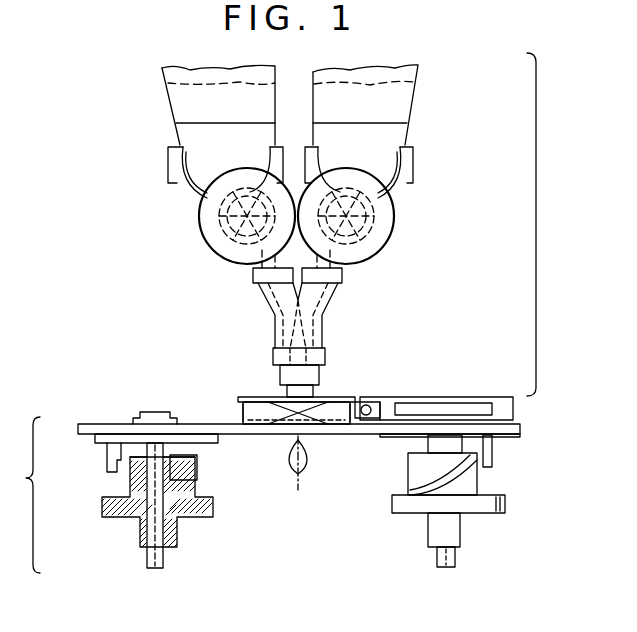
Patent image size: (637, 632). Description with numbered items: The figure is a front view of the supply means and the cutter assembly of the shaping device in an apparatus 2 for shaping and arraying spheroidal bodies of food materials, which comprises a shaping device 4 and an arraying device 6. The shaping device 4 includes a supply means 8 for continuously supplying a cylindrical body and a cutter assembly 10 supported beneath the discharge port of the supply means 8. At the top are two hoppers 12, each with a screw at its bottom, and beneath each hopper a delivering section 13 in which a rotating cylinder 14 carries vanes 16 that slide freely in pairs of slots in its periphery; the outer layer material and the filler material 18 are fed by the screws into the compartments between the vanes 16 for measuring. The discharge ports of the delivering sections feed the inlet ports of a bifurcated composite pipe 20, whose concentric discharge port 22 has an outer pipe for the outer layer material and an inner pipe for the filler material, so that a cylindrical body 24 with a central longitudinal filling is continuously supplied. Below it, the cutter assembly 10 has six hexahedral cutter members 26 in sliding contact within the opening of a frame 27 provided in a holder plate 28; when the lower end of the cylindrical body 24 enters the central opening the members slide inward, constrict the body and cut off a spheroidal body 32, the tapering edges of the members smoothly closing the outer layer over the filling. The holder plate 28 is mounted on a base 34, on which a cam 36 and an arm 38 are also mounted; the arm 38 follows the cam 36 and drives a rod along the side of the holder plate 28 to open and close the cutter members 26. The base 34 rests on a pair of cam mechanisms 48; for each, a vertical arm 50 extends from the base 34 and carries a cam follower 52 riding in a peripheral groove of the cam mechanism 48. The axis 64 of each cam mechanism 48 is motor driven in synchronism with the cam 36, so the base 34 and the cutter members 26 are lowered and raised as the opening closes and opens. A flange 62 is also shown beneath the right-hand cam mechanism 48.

The apparatus 2 is at (460, 69).
The shaping device 4 is at (536, 238).
The arraying device 6 is at (22, 495).
The supply means 8 is at (460, 187).
The cutter assembly 10 is at (247, 381).
The hopper 12 is at (182, 115).
The delivering section 13 is at (242, 266).
The rotating cylinder 14 is at (225, 243).
The vane 16 is at (210, 203).
The filler material 18 is at (185, 87).
The bifurcated composite pipe 20 is at (325, 300).
The concentric discharge port 22 is at (325, 358).
The cylindrical body 24 is at (320, 378).
The cutter member 26 is at (272, 430).
The frame 27 is at (241, 416).
The holder plate 28 is at (240, 398).
The spheroidal body 32 is at (299, 486).
The base 34 is at (80, 428).
The cam 36 is at (362, 418).
The arm 38 is at (462, 397).
The cam mechanism 48 is at (197, 480).
The vertical arm 50 is at (105, 458).
The cam follower 52 is at (112, 488).
The flange 62 is at (483, 490).
The axis 64 is at (163, 552).